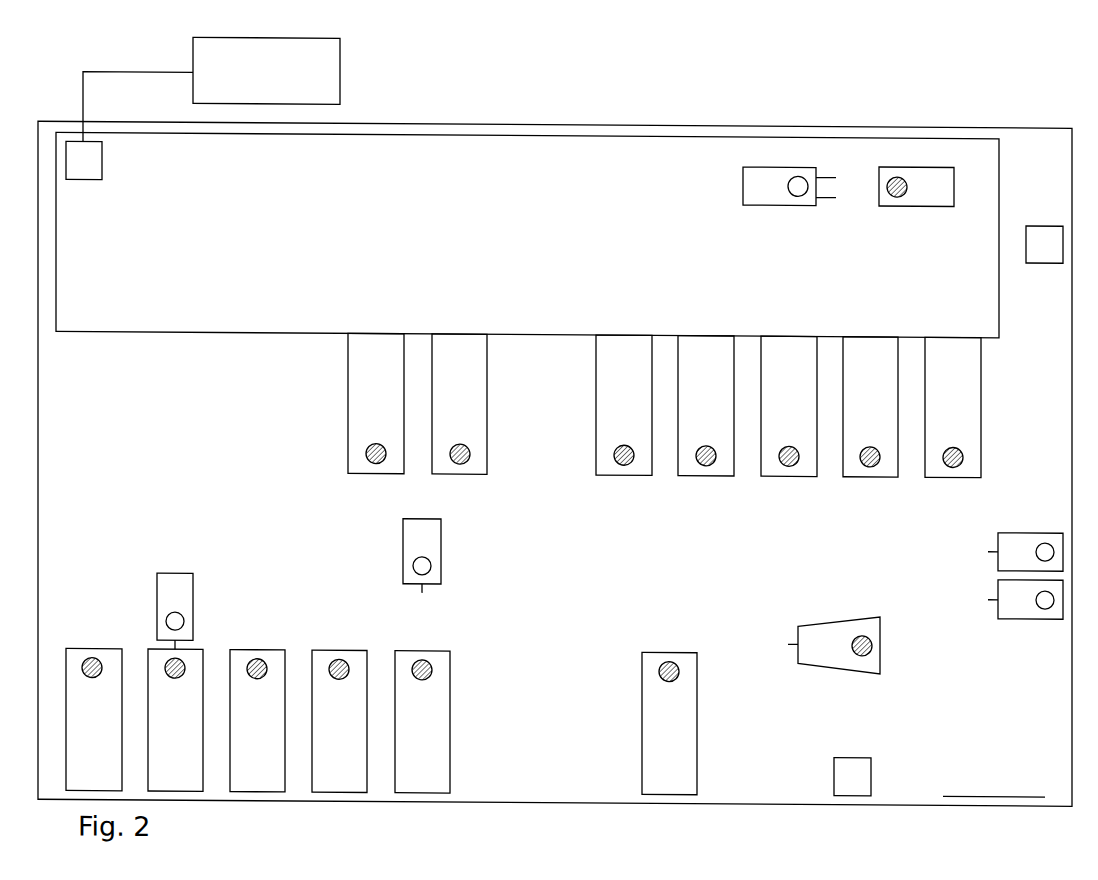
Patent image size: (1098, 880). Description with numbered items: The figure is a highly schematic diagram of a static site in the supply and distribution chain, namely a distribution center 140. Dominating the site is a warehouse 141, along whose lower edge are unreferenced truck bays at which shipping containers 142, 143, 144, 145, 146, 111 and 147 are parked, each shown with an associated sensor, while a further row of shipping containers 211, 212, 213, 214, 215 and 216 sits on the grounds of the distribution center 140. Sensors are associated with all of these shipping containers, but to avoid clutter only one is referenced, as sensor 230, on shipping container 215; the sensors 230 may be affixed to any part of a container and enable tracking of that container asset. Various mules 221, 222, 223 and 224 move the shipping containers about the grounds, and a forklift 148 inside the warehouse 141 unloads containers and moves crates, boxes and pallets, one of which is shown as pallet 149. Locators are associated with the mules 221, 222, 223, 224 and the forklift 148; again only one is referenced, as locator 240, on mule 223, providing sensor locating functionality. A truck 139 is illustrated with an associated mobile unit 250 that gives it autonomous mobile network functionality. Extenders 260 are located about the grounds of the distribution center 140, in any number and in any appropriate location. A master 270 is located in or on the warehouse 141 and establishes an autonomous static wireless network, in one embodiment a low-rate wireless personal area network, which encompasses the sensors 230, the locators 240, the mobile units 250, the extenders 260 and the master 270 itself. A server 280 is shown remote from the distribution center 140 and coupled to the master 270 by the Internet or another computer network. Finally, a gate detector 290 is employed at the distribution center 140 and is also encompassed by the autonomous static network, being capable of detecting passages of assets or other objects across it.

The distribution center 140 is at (540, 787).
The warehouse 141 is at (513, 254).
The server 280 is at (251, 92).
The master 270 is at (69, 168).
The forklift 148 is at (752, 190).
The pallet 149 is at (914, 190).
The extender 260 is at (1030, 246).
The shipping container 142 is at (361, 411).
The shipping container 143 is at (445, 411).
The shipping container 144 is at (609, 411).
The shipping container 145 is at (691, 411).
The shipping container 146 is at (774, 411).
The shipping container 111 is at (855, 411).
The shipping container 147 is at (938, 411).
The shipping container 211 is at (79, 730).
The shipping container 212 is at (161, 730).
The shipping container 213 is at (243, 730).
The shipping container 214 is at (325, 730).
The shipping container 215 is at (407, 730).
The shipping container 216 is at (655, 730).
The mule 222 is at (160, 605).
The mule 223 is at (407, 548).
The mule 224 is at (1004, 554).
The mule 221 is at (1004, 602).
The truck 139 is at (805, 648).
The sensor 230 is at (430, 662).
The locator 240 is at (430, 559).
The mobile unit 250 is at (872, 636).
The gate detector 290 is at (965, 790).